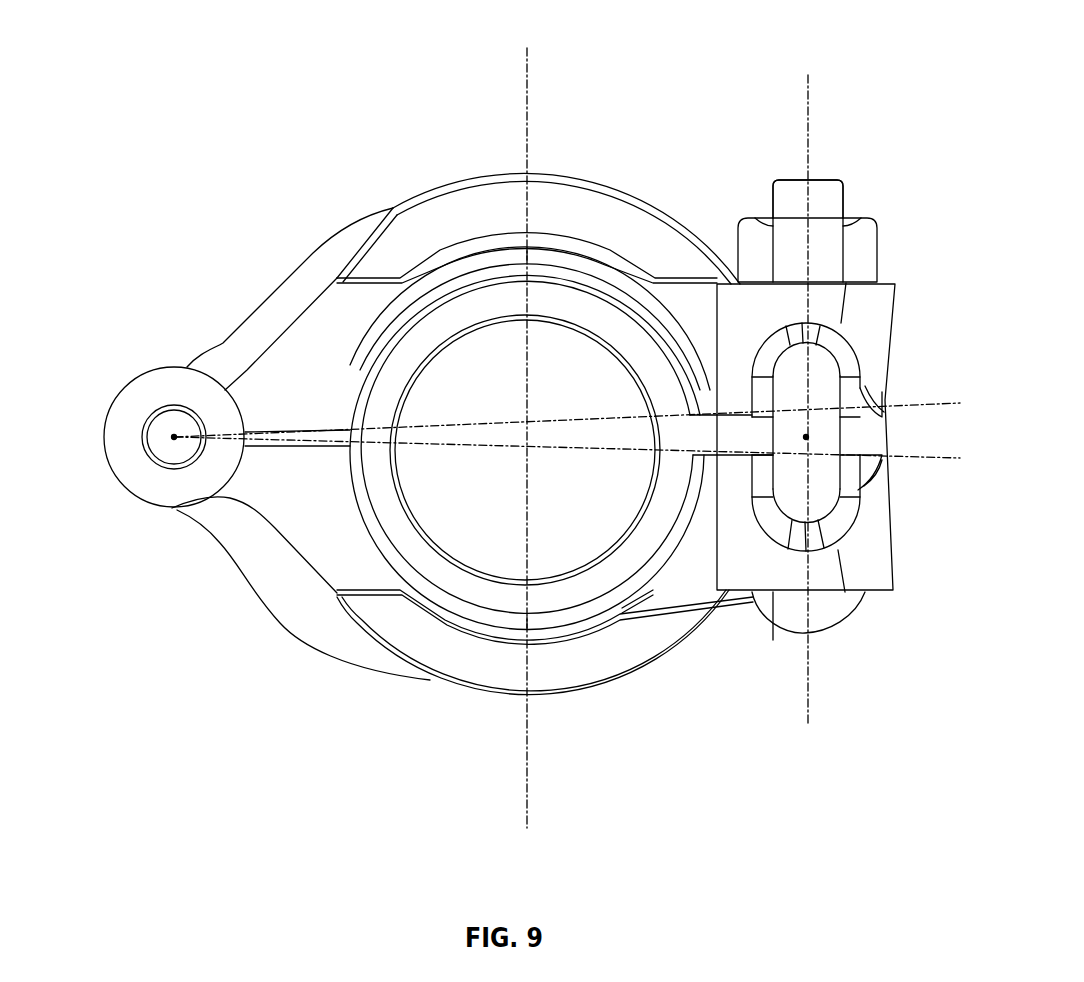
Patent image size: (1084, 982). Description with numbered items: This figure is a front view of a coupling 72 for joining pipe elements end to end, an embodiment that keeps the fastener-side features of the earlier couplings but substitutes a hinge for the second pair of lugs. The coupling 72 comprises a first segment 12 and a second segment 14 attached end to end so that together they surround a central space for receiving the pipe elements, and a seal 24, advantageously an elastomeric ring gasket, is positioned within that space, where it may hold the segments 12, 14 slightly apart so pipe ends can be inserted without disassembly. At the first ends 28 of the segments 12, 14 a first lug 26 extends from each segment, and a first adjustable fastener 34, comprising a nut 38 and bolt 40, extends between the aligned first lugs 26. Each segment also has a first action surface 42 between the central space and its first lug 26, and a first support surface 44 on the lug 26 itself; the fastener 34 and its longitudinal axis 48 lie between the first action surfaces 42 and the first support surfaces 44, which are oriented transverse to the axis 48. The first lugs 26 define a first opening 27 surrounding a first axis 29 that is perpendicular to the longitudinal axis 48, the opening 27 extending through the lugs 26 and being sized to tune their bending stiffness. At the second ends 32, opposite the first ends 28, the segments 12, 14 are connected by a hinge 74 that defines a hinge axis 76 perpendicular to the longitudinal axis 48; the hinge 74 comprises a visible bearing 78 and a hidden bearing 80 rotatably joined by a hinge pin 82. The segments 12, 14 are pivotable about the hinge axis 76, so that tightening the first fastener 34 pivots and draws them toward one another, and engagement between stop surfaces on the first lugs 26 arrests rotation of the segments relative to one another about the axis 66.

The coupling 72 is at (782, 44).
The axis 66 is at (532, 92).
The second segment 14 is at (537, 190).
The first ends 28 is at (660, 268).
The first adjustable fastener 34 is at (849, 196).
The bolt 40 is at (849, 196).
The nut 38 is at (876, 243).
The first lug 26 is at (882, 298).
The second end 32 is at (270, 357).
The bearing 80 is at (200, 363).
The bearing 78 is at (107, 438).
The hinge axis 76 is at (150, 450).
The hinge pin 82 is at (172, 468).
The hinge 74 is at (175, 510).
The seal 24 is at (388, 498).
The first action surface 42 is at (771, 404).
The first axis 29 is at (811, 437).
The first support surface 44 is at (880, 468).
The first opening 27 is at (790, 525).
The longitudinal axis 48 is at (813, 690).
The first segment 12 is at (540, 702).